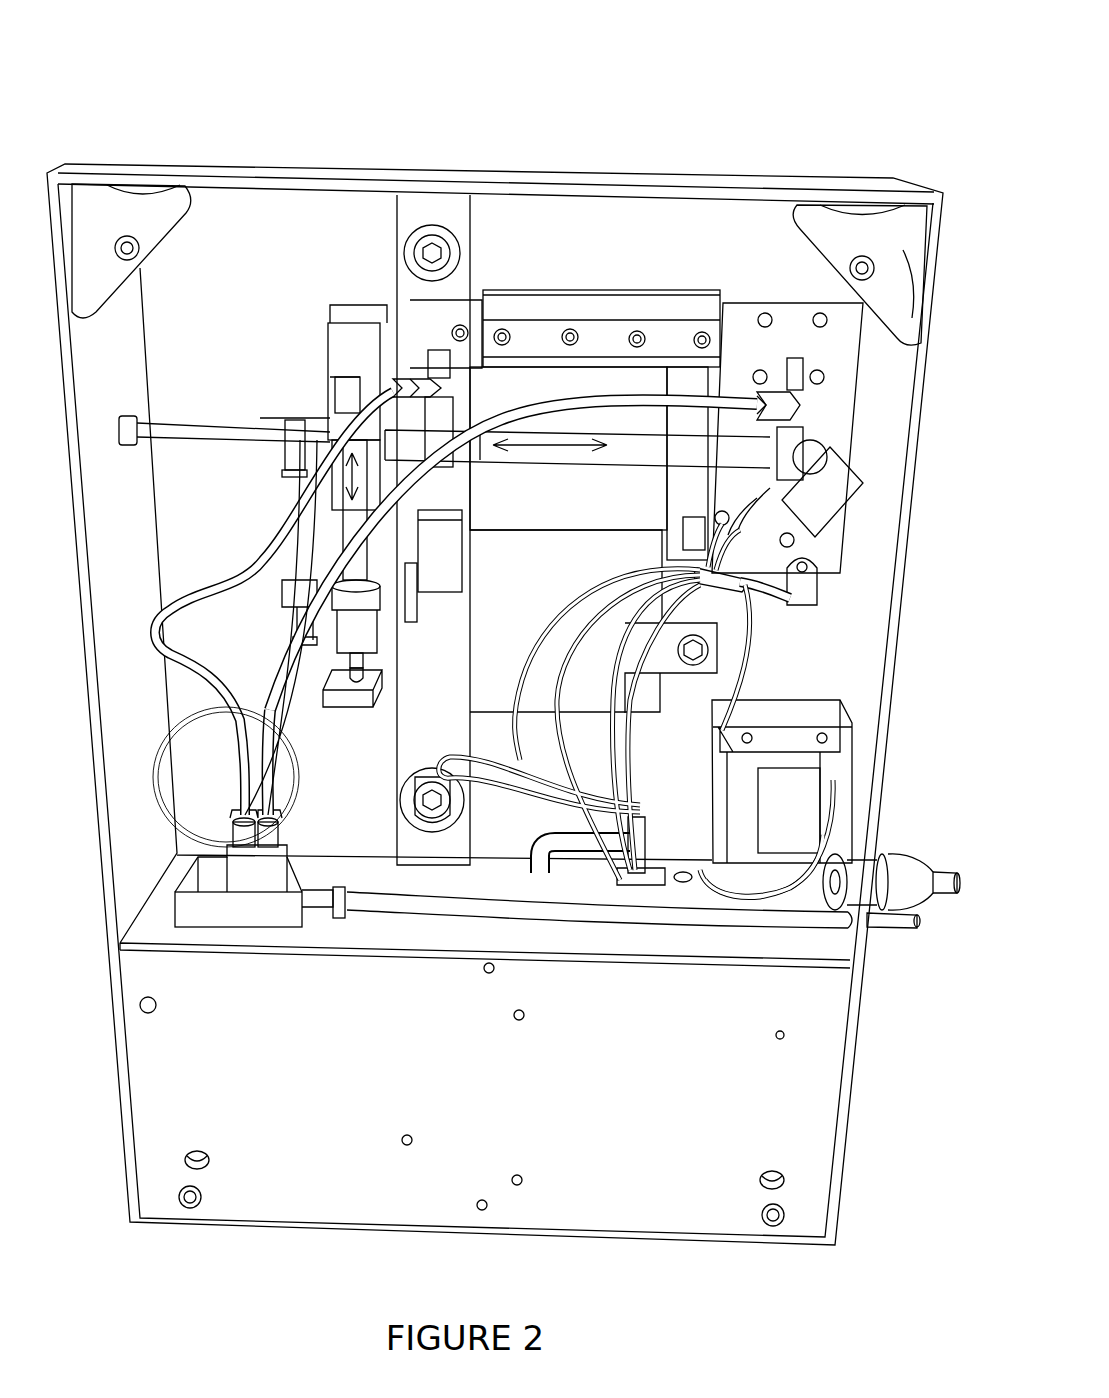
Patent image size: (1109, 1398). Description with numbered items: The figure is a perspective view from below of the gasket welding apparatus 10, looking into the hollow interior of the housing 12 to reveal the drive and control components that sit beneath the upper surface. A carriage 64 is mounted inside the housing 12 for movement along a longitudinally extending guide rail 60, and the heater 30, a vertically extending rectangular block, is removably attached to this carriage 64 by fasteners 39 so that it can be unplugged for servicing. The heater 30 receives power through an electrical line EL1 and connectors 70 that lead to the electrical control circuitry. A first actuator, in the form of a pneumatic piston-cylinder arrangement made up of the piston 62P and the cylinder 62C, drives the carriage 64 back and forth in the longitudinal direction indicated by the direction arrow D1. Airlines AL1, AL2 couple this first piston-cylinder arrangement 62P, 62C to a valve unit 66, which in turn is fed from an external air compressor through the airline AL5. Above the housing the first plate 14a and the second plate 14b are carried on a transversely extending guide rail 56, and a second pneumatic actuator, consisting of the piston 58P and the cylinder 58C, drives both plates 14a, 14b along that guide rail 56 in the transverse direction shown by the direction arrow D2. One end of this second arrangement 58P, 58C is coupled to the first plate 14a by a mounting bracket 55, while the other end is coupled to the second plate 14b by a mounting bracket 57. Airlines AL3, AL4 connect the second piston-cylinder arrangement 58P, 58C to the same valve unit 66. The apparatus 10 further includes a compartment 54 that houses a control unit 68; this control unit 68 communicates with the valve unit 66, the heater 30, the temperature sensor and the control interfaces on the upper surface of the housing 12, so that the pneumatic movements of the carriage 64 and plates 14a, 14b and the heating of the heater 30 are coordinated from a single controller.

The gasket welding apparatus 10 is at (732, 97).
The housing 12 is at (305, 168).
The first plate 14a is at (498, 589).
The second plate 14b is at (490, 509).
The heater 30 is at (685, 532).
The fasteners 39 is at (795, 541).
The compartment 54 is at (603, 1185).
The mounting bracket 55 is at (338, 702).
The guide rail 56 is at (446, 729).
The mounting bracket 57 is at (330, 417).
The cylinder of second piston-cylinder arrangement 58C is at (350, 567).
The piston of second piston-cylinder arrangement 58P is at (345, 657).
The guide rail 60 is at (593, 340).
The cylinder of first piston-cylinder arrangement 62C is at (643, 447).
The piston of first piston-cylinder arrangement 62P is at (222, 427).
The carriage 64 is at (827, 400).
The valve unit 66 is at (258, 913).
The control unit 68 is at (778, 803).
The connectors 70 is at (807, 597).
The airline AL1 is at (533, 400).
The airline AL2 is at (377, 413).
The airline AL3 is at (160, 638).
The airline AL4 is at (305, 655).
The airline AL5 is at (790, 917).
The electrical line EL1 is at (950, 877).
The direction arrow D1 is at (543, 446).
The direction arrow D2 is at (340, 480).